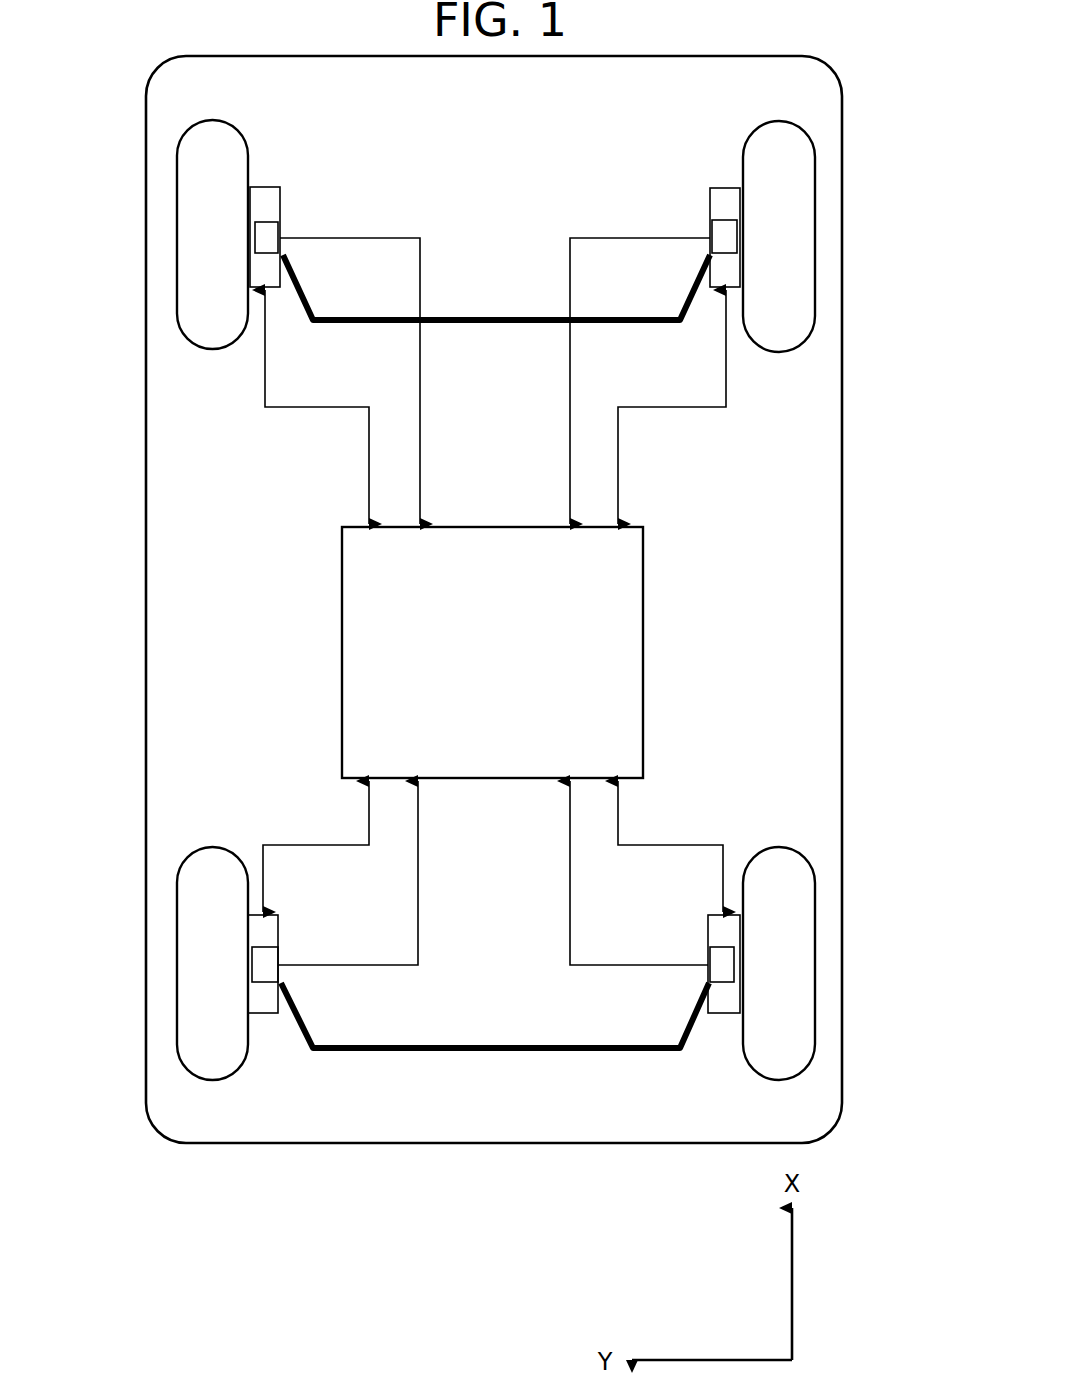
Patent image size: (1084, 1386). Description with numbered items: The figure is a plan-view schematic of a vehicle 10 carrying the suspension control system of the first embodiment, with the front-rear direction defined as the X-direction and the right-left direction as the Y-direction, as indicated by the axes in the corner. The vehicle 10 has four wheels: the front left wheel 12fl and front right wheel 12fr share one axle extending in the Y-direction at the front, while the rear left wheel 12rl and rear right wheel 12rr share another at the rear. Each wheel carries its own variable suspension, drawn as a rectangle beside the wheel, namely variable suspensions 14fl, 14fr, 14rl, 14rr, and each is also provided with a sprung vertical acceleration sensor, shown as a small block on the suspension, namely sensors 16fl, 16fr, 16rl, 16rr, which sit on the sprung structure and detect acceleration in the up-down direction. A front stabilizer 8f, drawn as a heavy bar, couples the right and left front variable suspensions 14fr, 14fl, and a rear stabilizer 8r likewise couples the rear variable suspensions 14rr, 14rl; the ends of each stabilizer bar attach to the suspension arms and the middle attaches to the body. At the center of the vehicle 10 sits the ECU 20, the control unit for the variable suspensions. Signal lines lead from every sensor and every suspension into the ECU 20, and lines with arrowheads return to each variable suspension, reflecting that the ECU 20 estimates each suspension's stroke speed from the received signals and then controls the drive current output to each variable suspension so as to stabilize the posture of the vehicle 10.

The stabilizer 8f is at (525, 323).
The stabilizer 8r is at (516, 1046).
The vehicle 10 is at (842, 390).
The front left wheel 12fl is at (177, 170).
The front right wheel 12fr is at (815, 168).
The rear left wheel 12rl is at (177, 897).
The rear right wheel 12rr is at (815, 893).
The variable suspension 14fl is at (280, 187).
The variable suspension 14fr is at (712, 188).
The variable suspension 14rl is at (268, 1013).
The variable suspension 14rr is at (722, 1013).
The sprung vertical acceleration sensor 16fl is at (283, 230).
The sprung vertical acceleration sensor 16fr is at (708, 230).
The sprung vertical acceleration sensor 16rl is at (283, 957).
The sprung vertical acceleration sensor 16rr is at (706, 957).
The ECU 20 is at (643, 617).